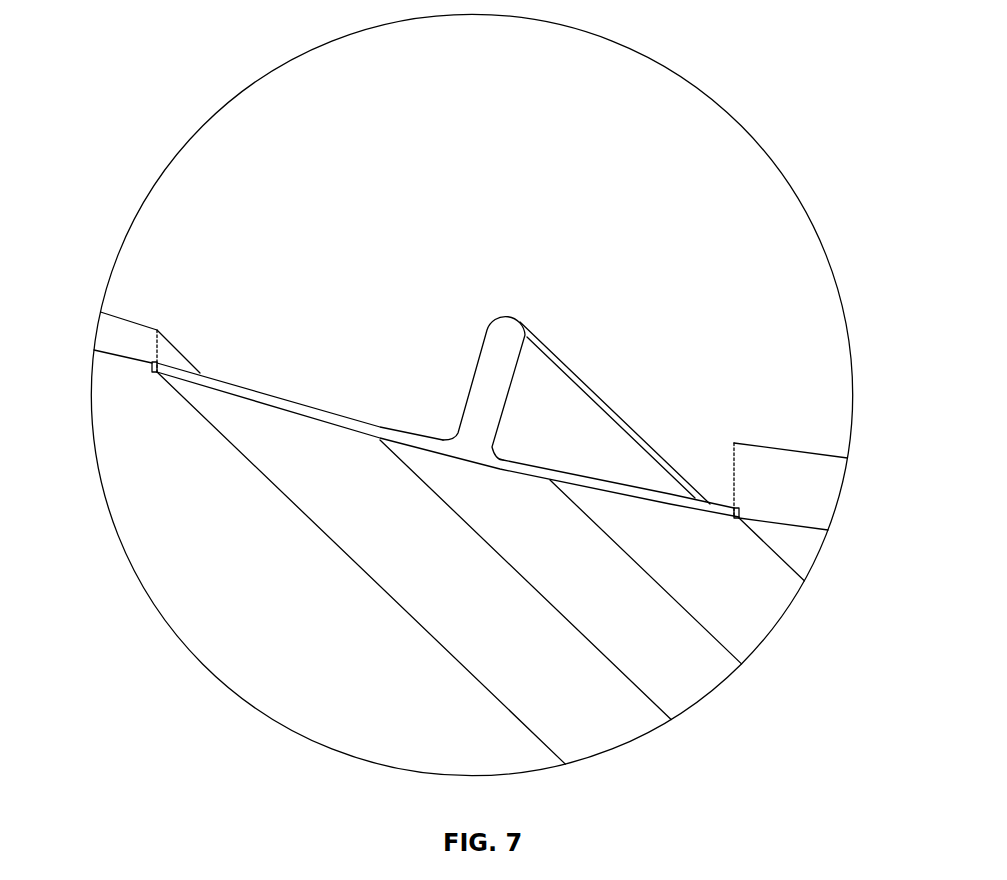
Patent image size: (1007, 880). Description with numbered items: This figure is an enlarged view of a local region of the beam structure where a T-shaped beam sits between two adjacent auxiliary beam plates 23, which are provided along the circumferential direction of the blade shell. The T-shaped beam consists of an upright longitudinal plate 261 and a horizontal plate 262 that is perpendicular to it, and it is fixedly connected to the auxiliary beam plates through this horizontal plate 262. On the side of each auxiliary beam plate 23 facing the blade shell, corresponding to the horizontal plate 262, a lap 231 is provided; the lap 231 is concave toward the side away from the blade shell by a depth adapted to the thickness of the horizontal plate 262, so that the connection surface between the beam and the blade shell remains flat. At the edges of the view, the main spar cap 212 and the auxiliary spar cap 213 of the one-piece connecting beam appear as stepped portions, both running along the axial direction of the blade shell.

The main spar cap 212 is at (808, 463).
The auxiliary spar cap 213 is at (122, 327).
The auxiliary beam plate 23 is at (775, 610).
The lap 231 is at (413, 440).
The longitudinal plate 261 is at (517, 323).
The horizontal plate 262 is at (697, 682).